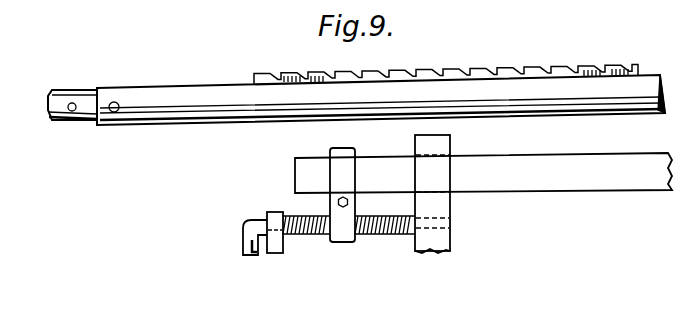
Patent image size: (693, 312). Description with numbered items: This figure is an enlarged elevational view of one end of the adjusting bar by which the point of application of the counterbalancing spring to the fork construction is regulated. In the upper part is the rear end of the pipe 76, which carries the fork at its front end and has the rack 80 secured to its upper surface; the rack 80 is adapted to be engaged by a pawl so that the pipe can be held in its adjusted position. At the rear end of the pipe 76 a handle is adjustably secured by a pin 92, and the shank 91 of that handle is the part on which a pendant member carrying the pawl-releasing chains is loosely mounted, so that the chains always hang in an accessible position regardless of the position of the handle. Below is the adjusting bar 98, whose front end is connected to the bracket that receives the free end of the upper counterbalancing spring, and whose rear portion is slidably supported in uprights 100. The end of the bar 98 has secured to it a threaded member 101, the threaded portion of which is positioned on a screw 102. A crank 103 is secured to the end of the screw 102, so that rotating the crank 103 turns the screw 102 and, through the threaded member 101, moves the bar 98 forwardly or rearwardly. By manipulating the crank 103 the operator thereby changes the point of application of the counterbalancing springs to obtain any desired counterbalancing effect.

The pipe 76 is at (195, 93).
The rack 80 is at (588, 73).
The shank 91 is at (82, 90).
The pin 92 is at (116, 103).
The bar 98 is at (634, 178).
The uprights 100 is at (438, 200).
The threaded member 101 is at (342, 222).
The screw 102 is at (395, 233).
The crank 103 is at (247, 237).